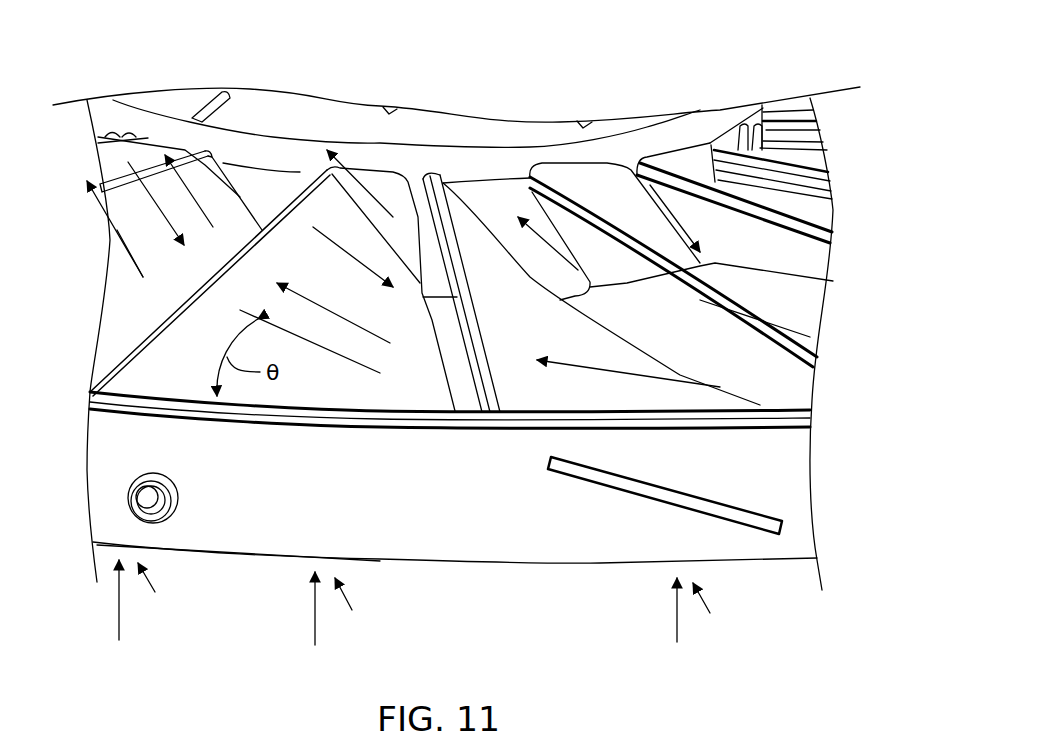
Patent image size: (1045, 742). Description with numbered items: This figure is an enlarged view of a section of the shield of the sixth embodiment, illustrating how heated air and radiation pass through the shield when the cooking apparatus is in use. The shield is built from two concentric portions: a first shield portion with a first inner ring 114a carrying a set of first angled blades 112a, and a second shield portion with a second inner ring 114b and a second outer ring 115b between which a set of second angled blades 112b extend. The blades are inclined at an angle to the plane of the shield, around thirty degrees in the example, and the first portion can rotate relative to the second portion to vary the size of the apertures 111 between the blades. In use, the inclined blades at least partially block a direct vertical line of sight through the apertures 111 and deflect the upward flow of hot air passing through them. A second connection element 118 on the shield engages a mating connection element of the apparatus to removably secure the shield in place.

The apertures 111 is at (800, 292).
The first angled blades 112a is at (800, 332).
The second angled blades 112b is at (523, 392).
The first inner ring 114a is at (298, 117).
The second inner ring 114b is at (258, 185).
The second outer ring 115b is at (420, 520).
The second connection element 118 is at (163, 520).